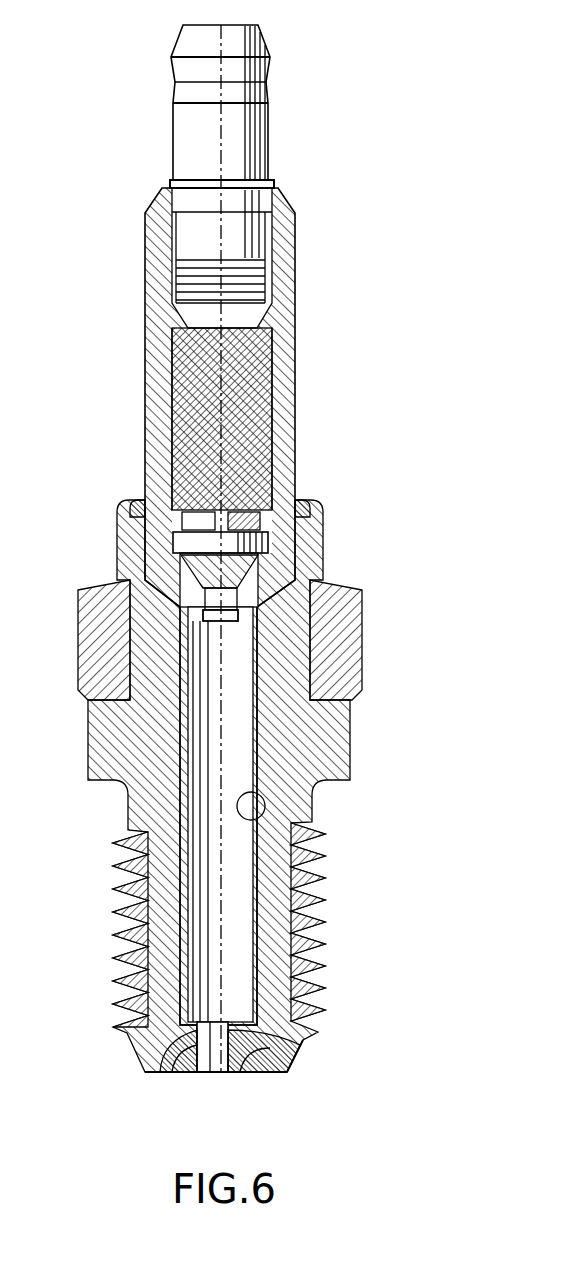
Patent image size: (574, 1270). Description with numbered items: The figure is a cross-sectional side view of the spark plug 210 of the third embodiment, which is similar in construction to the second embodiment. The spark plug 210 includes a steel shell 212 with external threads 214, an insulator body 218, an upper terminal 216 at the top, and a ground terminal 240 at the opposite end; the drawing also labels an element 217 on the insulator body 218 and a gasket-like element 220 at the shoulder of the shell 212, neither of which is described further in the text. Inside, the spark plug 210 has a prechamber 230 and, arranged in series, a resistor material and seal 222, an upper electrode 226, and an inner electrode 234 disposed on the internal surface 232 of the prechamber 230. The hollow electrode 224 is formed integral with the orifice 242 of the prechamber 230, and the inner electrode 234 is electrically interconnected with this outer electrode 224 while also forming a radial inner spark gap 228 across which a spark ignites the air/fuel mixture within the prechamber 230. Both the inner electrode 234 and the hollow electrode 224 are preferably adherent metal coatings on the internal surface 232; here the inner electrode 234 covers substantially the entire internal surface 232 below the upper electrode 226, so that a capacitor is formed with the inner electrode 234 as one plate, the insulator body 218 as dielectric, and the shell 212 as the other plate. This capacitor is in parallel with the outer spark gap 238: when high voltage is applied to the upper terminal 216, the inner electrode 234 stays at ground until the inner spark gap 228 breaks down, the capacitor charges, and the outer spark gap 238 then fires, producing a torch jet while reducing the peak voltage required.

The spark plug 210 is at (238, 592).
The steel shell 212 is at (328, 587).
The external threads 214 is at (315, 913).
The upper terminal 216 is at (252, 130).
The insulator bore wall 217 is at (180, 407).
The insulator body 218 is at (163, 370).
The gasket 220 is at (140, 503).
The resistor material and seal 222 is at (233, 384).
The hollow electrode 224 is at (228, 1075).
The upper electrode 226 is at (262, 479).
The inner spark gap 228 is at (180, 580).
The prechamber 230 is at (210, 903).
The internal surface 232 is at (300, 1043).
The inner electrode 234 is at (250, 826).
The outer spark gap 238 is at (177, 1073).
The ground terminal 240 is at (150, 1062).
The orifice 242 is at (170, 1050).